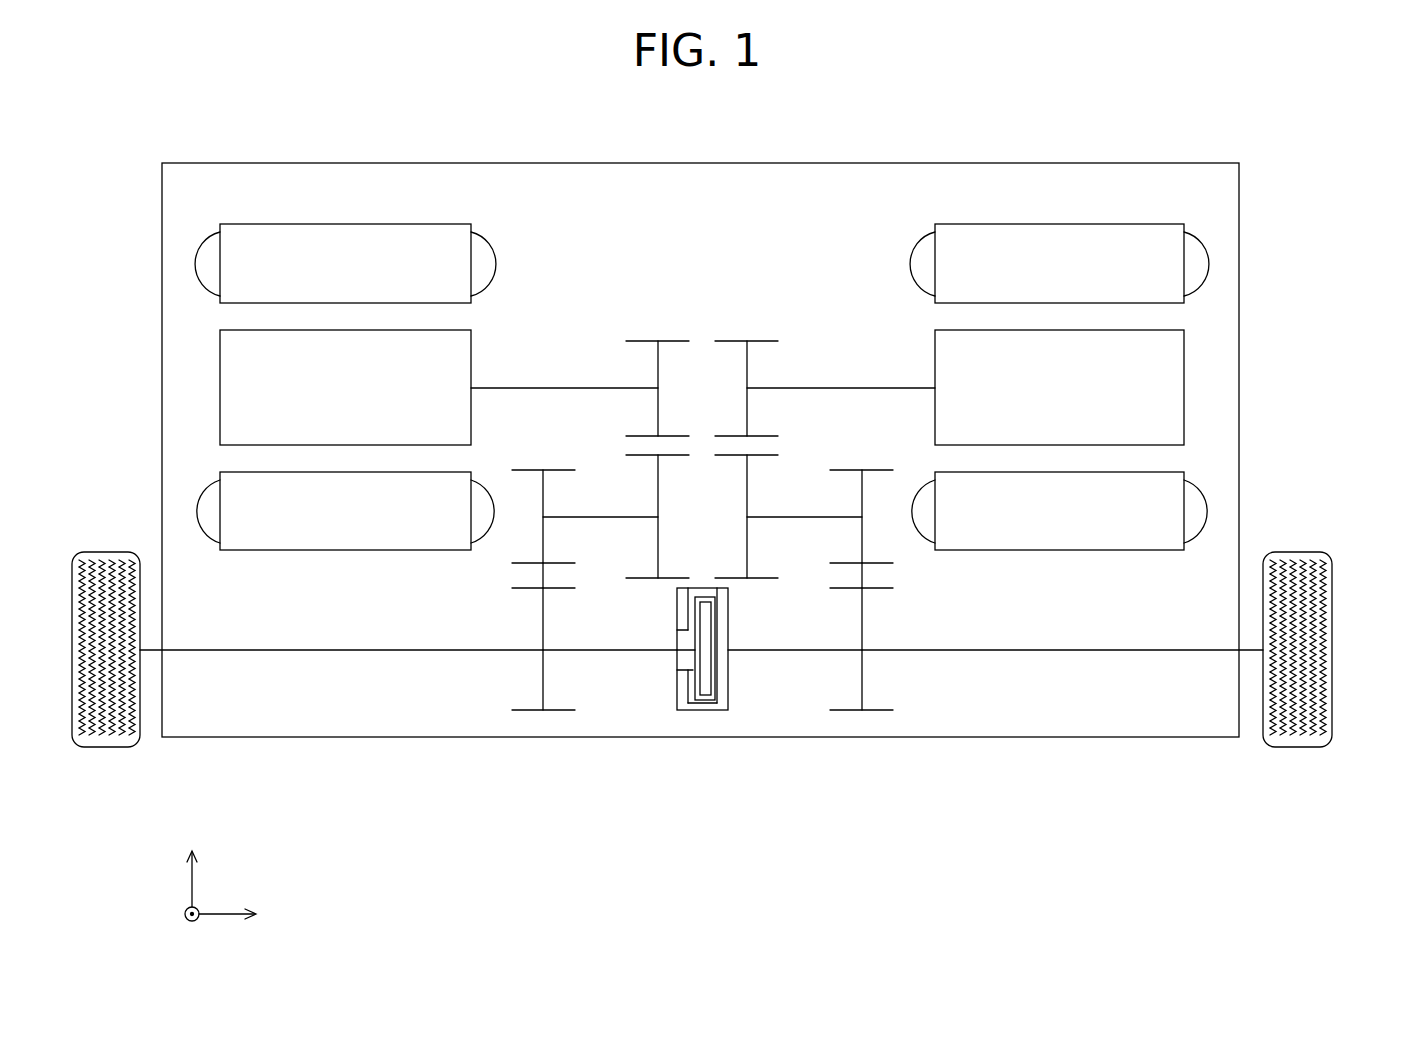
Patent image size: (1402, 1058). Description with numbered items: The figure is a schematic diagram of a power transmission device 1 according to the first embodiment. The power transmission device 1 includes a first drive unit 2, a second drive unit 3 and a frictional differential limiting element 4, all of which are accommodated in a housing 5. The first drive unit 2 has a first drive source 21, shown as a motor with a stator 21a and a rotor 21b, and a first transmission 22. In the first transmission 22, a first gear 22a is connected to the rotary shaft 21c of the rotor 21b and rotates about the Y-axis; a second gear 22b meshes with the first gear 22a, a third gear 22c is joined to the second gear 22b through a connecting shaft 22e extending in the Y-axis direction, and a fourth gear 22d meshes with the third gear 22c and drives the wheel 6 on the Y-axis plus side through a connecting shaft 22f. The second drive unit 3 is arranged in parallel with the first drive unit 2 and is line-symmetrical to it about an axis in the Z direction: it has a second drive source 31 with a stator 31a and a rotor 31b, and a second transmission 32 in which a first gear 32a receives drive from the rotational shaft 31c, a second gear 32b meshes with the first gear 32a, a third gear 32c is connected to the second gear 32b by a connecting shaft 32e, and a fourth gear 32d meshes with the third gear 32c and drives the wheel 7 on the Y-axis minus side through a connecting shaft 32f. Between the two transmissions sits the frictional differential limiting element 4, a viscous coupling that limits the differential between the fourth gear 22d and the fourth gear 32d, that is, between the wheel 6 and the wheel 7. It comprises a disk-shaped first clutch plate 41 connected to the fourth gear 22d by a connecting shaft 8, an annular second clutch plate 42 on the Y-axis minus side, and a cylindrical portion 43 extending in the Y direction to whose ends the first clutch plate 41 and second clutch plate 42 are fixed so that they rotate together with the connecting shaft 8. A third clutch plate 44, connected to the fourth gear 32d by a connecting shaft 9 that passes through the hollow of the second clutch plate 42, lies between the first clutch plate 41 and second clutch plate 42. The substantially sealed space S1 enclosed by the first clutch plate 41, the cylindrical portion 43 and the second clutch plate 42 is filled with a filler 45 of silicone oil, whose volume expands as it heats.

The power transmission device 1 is at (1175, 48).
The first drive unit 2 is at (1058, 212).
The second drive unit 3 is at (342, 212).
The frictional differential limiting element 4 is at (695, 714).
The housing 5 is at (735, 163).
The wheel 6 is at (1332, 625).
The wheel 7 is at (72, 625).
The connecting shaft 8 is at (795, 650).
The connecting shaft 9 is at (585, 650).
The first drive source 21 is at (1212, 320).
The stator 21a is at (1165, 232).
The rotor 21b is at (1170, 393).
The rotary shaft 21c is at (892, 388).
The first transmission 22 is at (777, 323).
The first gear 22a is at (747, 368).
The second gear 22b is at (747, 490).
The third gear 22c is at (864, 548).
The fourth gear 22d is at (862, 628).
The connecting shaft 22e is at (802, 517).
The connecting shaft 22f is at (1165, 650).
The second drive source 31 is at (190, 320).
The stator 31a is at (232, 232).
The rotor 31b is at (220, 393).
The rotational shaft 31c is at (512, 388).
The second transmission 32 is at (598, 323).
The first gear 32a is at (658, 368).
The second gear 32b is at (658, 490).
The third gear 32c is at (541, 548).
The fourth gear 32d is at (543, 628).
The connecting shaft 32e is at (597, 517).
The connecting shaft 32f is at (285, 650).
The first clutch plate 41 is at (728, 673).
The second clutch plate 42 is at (677, 613).
The cylindrical portion 43 is at (712, 690).
The third clutch plate 44 is at (700, 685).
The filler 45 is at (677, 678).
The space S1 is at (718, 695).